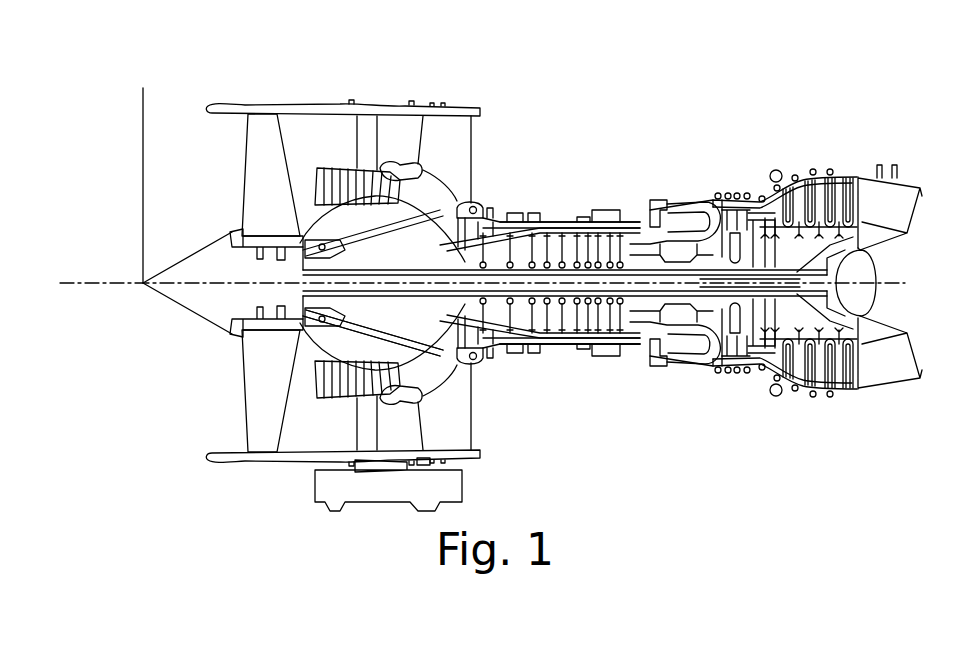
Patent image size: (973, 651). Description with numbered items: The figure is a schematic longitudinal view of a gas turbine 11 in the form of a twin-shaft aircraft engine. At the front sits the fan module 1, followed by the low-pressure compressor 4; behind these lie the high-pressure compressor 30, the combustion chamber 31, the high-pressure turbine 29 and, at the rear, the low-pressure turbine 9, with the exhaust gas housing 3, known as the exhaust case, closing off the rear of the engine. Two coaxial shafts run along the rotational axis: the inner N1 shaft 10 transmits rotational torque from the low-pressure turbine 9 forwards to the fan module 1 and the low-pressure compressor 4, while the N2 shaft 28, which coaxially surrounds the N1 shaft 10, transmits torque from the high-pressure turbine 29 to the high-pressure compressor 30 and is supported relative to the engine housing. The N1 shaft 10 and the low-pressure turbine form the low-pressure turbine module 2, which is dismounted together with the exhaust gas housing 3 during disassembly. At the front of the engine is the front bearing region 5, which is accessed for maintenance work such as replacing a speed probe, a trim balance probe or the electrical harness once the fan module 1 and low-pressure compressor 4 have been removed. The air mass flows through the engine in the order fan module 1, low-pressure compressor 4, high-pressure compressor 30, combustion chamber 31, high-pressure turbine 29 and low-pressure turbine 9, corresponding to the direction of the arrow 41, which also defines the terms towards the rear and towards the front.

The fan module 1 is at (270, 445).
The low-pressure turbine module 2 is at (794, 262).
The exhaust gas housing 3 is at (893, 300).
The low-pressure compressor 4 is at (327, 167).
The front bearing region 5 is at (402, 338).
The low-pressure turbine 9 is at (833, 192).
The N1 shaft 10 is at (573, 206).
The gas turbine 11 is at (614, 419).
The N2 shaft 28 is at (706, 200).
The high-pressure turbine 29 is at (729, 197).
The high-pressure compressor 30 is at (482, 224).
The combustion chamber 31 is at (660, 200).
The arrow 41 is at (590, 63).